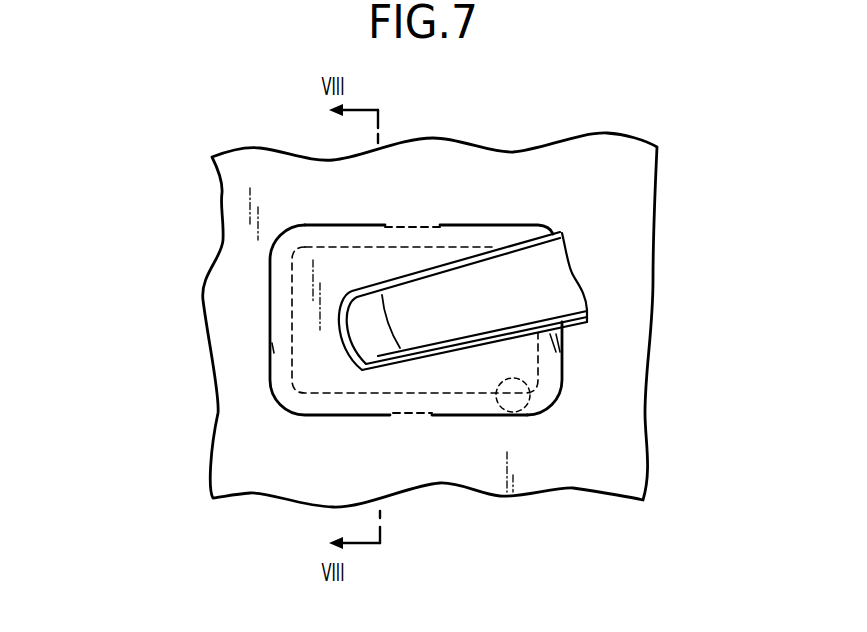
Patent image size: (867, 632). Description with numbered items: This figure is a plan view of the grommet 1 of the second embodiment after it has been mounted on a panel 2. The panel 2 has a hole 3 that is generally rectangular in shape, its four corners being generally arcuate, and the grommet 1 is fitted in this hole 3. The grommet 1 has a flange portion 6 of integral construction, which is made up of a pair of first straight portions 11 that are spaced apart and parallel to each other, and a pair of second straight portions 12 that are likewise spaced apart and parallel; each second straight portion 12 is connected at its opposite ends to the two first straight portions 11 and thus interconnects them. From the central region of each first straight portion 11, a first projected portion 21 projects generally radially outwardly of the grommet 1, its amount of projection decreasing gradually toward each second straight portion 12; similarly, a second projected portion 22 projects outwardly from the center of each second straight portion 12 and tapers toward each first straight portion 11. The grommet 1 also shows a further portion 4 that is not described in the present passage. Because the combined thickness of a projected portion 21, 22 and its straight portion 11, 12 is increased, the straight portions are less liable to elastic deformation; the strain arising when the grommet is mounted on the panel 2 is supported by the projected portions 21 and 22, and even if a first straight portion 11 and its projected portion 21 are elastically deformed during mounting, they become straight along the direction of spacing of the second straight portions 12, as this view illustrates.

The grommet 1 is at (429, 318).
The panel 2 is at (620, 423).
The hole 3 is at (520, 412).
The clip tongue 4 is at (558, 232).
The flange portion 6 is at (493, 226).
The first straight portions 11 is at (432, 246).
The second straight portions 12 is at (270, 352).
The first projected portions 21 is at (403, 230).
The second projected portions 22 is at (270, 317).